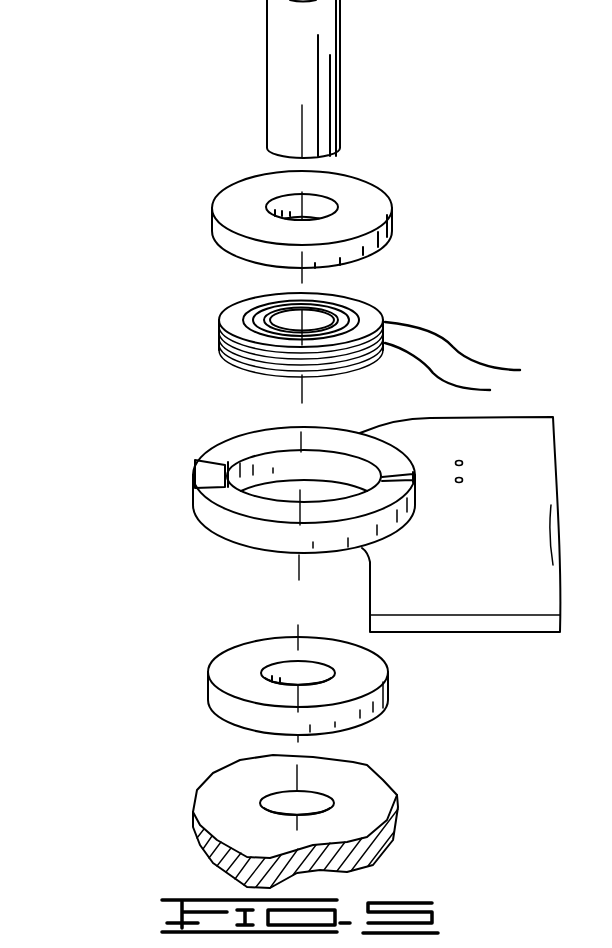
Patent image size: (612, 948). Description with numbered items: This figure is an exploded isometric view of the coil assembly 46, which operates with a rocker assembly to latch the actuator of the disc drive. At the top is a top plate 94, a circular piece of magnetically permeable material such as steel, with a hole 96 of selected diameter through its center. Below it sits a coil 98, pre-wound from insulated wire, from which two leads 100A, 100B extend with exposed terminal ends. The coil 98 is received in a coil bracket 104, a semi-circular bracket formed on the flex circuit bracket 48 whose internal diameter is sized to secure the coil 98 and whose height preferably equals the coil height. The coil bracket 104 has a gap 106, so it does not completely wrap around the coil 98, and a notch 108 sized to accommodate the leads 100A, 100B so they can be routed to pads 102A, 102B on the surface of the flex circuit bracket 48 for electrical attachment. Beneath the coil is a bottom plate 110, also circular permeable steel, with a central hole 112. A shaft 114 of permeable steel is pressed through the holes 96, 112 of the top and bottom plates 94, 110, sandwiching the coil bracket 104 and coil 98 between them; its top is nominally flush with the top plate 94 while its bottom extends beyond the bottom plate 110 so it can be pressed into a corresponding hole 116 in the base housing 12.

The base housing 12 is at (213, 802).
The coil assembly 46 is at (145, 357).
The flex circuit bracket 48 is at (513, 590).
The top plate 94 is at (240, 215).
The hole 96 is at (318, 205).
The coil 98 is at (217, 330).
The lead 100A is at (427, 373).
The lead 100B is at (433, 333).
The pad 102A is at (460, 483).
The pad 102B is at (462, 465).
The coil bracket 104 is at (223, 530).
The gap 106 is at (196, 478).
The notch 108 is at (417, 455).
The bottom plate 110 is at (232, 672).
The hole 112 is at (307, 672).
The shaft 114 is at (282, 88).
The hole 116 is at (308, 798).